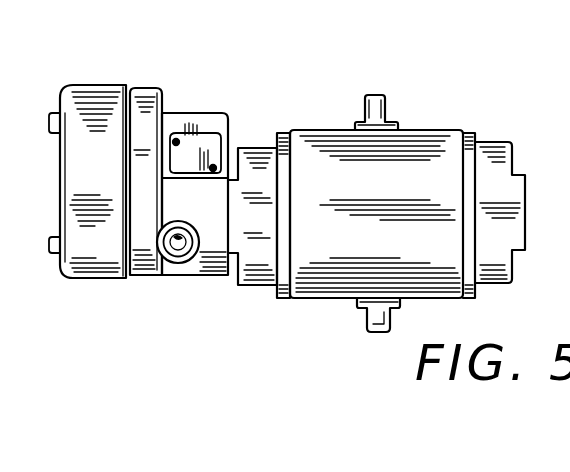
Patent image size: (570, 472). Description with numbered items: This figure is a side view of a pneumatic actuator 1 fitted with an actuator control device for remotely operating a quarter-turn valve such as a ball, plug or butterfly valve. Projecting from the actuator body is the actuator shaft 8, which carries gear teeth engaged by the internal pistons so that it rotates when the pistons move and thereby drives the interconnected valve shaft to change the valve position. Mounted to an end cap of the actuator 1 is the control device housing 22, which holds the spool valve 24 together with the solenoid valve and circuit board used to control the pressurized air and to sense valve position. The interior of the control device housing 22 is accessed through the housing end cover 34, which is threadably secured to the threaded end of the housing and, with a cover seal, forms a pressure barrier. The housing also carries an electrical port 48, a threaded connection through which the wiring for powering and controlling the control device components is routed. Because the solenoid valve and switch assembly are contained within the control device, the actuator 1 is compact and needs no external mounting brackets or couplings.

The pneumatic actuator 1 is at (438, 57).
The actuator shaft 8 is at (383, 96).
The control device housing 22 is at (156, 88).
The spool valve 24 is at (226, 113).
The housing end cover 34 is at (101, 88).
The electrical port 48 is at (176, 262).